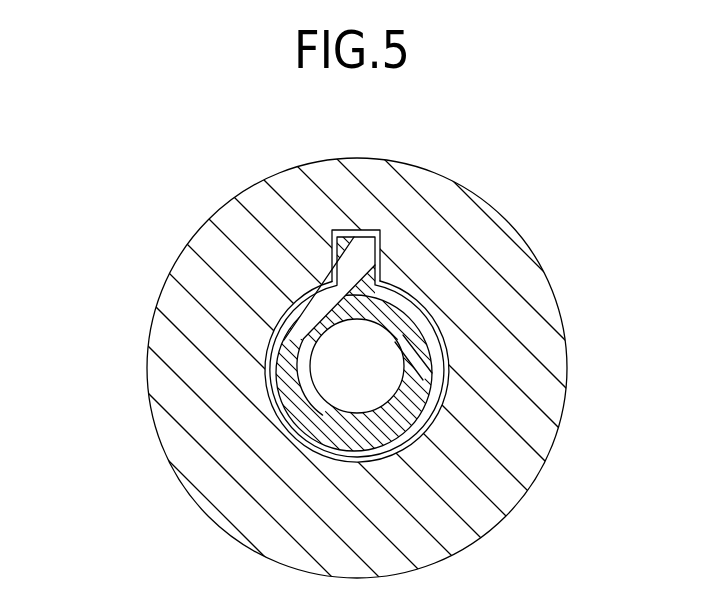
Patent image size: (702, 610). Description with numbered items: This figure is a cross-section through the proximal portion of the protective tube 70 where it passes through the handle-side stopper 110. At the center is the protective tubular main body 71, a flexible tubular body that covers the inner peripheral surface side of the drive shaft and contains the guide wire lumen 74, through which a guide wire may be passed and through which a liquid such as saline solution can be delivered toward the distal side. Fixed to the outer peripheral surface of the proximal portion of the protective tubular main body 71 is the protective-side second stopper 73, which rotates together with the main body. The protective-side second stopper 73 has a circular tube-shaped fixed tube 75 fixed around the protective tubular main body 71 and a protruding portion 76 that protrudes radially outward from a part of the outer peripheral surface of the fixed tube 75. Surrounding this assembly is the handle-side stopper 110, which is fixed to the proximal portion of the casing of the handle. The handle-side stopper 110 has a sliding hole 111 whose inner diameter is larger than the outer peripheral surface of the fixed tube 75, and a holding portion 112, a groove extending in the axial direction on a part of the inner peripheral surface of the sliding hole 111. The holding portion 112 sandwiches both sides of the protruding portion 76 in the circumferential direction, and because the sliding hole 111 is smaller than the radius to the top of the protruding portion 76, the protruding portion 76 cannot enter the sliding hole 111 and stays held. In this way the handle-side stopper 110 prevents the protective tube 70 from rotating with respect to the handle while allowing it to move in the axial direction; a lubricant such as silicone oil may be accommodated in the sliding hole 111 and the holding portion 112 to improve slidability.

The handle-side stopper 110 is at (243, 232).
The sliding hole 111 is at (430, 432).
The holding portion 112 is at (375, 238).
The protective-side second stopper 73 is at (283, 303).
The protective tube 70 is at (440, 322).
The fixed tube 75 is at (432, 370).
The protective tubular main body 71 is at (305, 367).
The guide wire lumen 74 is at (353, 376).
The protruding portion 76 is at (354, 252).